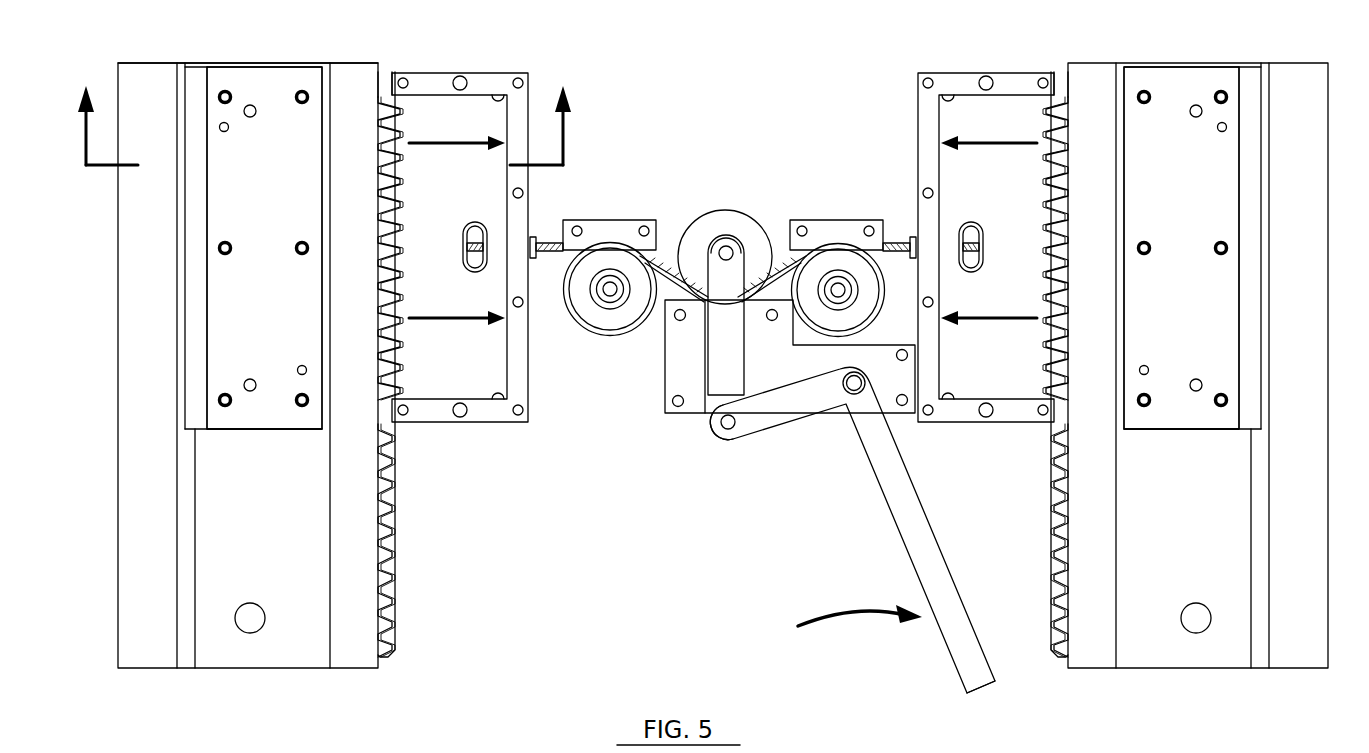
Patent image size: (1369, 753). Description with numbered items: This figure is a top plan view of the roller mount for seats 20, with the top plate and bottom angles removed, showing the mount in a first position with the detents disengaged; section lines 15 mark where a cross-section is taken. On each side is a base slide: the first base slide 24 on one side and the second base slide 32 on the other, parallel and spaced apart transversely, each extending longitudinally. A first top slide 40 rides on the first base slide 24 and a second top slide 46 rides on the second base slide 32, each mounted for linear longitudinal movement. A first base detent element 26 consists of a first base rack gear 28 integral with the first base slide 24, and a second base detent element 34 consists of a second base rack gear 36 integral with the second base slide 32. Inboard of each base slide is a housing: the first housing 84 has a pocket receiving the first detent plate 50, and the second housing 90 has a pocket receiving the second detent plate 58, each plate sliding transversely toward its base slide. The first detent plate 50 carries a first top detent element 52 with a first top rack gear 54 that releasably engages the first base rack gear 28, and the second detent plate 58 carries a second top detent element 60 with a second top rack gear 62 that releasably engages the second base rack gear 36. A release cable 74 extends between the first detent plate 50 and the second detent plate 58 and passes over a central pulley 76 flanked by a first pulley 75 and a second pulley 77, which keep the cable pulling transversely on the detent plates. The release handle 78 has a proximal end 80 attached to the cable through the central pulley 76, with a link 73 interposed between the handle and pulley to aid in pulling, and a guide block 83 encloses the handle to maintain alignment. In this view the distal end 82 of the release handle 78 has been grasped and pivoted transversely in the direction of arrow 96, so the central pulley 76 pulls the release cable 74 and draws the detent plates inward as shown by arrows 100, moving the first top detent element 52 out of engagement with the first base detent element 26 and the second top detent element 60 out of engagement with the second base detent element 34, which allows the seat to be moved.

The section line 15 is at (321, 105).
The roller mount for seats 20 is at (240, 41).
The first base slide 24 is at (313, 627).
The second base slide 32 is at (1287, 650).
The first top slide 40 is at (266, 320).
The second top slide 46 is at (1204, 320).
The first base detent element 26 is at (459, 364).
The first base rack gear 28 is at (398, 498).
The second base detent element 34 is at (1095, 409).
The second base rack gear 36 is at (1068, 612).
The first detent plate 50 is at (463, 209).
The second detent plate 58 is at (1011, 209).
The first top detent element 52 is at (455, 276).
The first top rack gear 54 is at (398, 355).
The second top detent element 60 is at (996, 278).
The second top rack gear 62 is at (1035, 358).
The first housing 84 is at (481, 85).
The second housing 90 is at (965, 82).
The arrows 100 is at (433, 140).
The link 73 is at (718, 362).
The release cable 74 is at (903, 235).
The first pulley 75 is at (601, 255).
The central pulley 76 is at (718, 222).
The second pulley 77 is at (850, 220).
The release handle 78 is at (915, 540).
The proximal end 80 is at (750, 415).
The distal end 82 is at (962, 655).
The guide block 83 is at (697, 410).
The arrow 96 is at (832, 630).